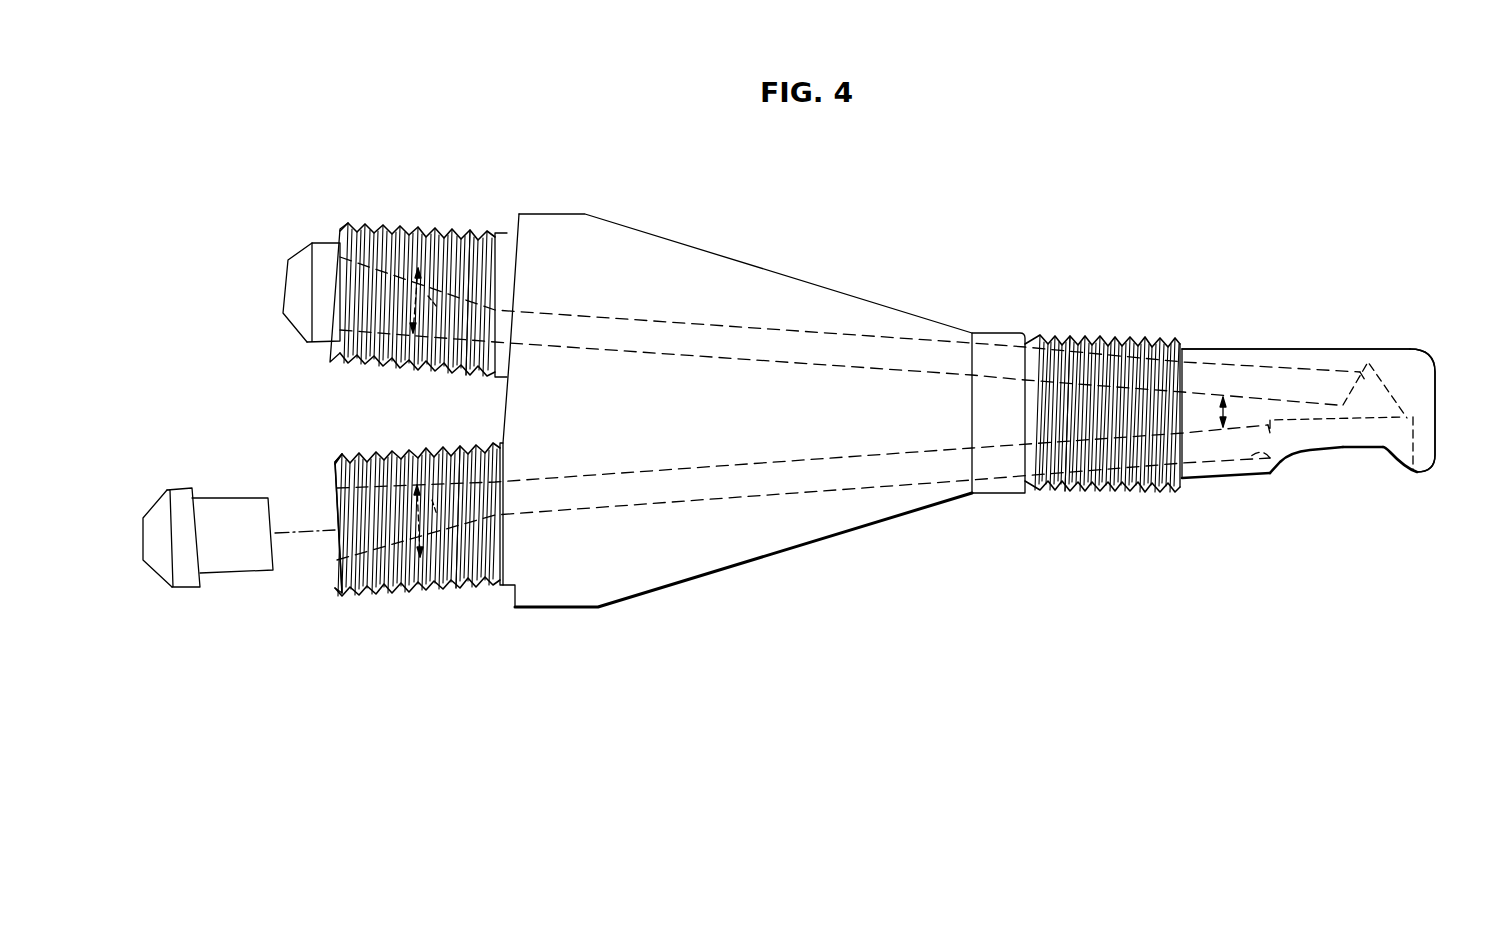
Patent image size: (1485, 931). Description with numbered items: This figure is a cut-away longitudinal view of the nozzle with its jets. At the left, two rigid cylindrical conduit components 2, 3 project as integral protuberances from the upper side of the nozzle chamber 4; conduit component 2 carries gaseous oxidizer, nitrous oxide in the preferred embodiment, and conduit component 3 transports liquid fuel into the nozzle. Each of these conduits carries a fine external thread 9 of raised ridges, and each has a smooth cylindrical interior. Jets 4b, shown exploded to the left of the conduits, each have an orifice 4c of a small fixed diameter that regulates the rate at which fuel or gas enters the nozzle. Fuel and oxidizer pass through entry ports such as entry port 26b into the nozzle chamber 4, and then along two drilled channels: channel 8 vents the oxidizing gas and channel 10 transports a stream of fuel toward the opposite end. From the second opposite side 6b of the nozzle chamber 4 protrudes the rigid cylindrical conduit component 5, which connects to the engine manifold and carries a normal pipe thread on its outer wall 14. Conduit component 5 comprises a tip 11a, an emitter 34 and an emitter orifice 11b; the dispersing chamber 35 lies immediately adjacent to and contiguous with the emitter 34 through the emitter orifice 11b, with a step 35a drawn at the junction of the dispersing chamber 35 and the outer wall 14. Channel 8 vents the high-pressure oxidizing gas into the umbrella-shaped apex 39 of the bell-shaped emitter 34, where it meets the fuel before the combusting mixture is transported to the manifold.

The cylindrical conduit component 2 is at (345, 224).
The cylindrical conduit component 3 is at (373, 597).
The nozzle chamber 4 is at (808, 274).
The jet 4b is at (303, 252).
The orifice 4c is at (287, 283).
The cylindrical conduit component 5 is at (1352, 348).
The second opposite side 6b is at (1223, 347).
The channel 8 is at (675, 325).
The external thread 9 is at (467, 232).
The channel 10 is at (875, 484).
The tip 11a is at (1436, 435).
The emitter orifice 11b is at (1376, 448).
The outer wall 14 is at (1137, 300).
The entry port 26b is at (336, 555).
The emitter 34 is at (1353, 418).
The dispersing chamber 35 is at (1290, 448).
The groove step 35a is at (1250, 458).
The apex 39 is at (1388, 368).